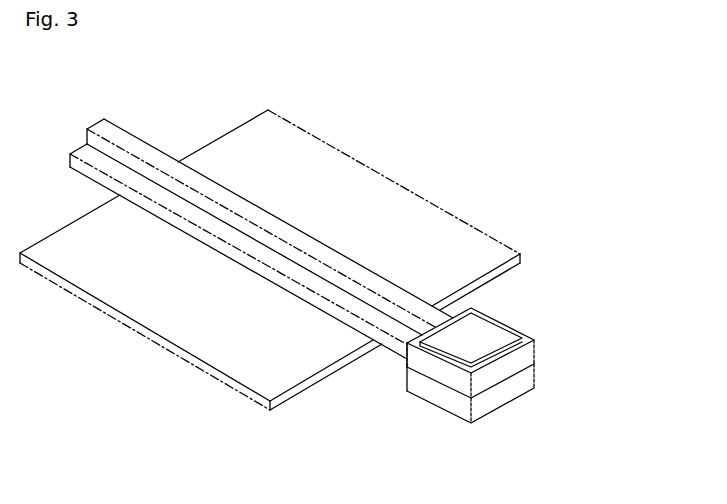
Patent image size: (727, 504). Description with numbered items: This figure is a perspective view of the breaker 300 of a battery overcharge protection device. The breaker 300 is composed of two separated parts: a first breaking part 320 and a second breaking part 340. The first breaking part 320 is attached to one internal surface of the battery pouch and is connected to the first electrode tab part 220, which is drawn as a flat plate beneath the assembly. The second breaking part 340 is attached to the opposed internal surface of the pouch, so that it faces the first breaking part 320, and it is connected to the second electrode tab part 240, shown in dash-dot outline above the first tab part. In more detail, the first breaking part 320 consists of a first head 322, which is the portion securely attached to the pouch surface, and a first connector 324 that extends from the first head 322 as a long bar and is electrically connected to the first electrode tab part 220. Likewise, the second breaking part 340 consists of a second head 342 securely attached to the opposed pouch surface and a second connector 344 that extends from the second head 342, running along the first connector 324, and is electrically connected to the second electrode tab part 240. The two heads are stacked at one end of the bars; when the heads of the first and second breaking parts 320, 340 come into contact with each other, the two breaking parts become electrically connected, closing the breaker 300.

The first electrode tab part 220 is at (135, 300).
The second electrode tab part 240 is at (338, 150).
The breaker 300 is at (487, 385).
The first breaking part 320 is at (448, 413).
The first head 322 is at (423, 390).
The first connector 324 is at (297, 277).
The second breaking part 340 is at (527, 332).
The second head 342 is at (536, 338).
The second connector 344 is at (357, 273).